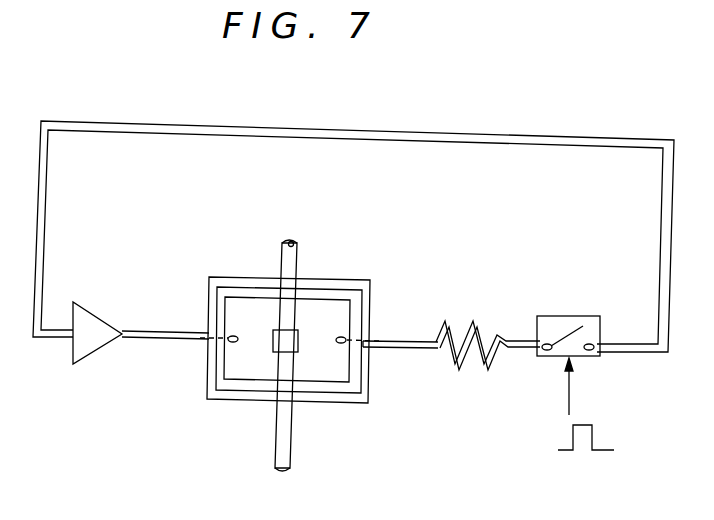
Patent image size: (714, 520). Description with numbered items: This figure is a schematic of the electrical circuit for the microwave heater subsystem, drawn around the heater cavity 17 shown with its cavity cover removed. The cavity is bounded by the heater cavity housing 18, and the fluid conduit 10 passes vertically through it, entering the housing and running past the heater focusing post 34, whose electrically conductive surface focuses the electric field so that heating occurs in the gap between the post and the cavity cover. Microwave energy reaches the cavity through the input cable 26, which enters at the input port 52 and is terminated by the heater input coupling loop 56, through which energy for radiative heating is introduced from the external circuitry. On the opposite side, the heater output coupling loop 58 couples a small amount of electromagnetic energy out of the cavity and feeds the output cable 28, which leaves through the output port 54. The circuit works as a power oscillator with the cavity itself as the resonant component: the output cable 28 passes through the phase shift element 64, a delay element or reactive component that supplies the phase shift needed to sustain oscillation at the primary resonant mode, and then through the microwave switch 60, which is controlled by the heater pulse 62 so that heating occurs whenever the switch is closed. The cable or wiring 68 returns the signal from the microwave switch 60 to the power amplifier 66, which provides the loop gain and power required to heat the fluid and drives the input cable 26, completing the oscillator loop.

The fluid conduit 10 is at (283, 251).
The heater cavity 17 is at (315, 318).
The heater cavity housing 18 is at (368, 288).
The input cable 26 is at (163, 330).
The output cable 28 is at (393, 341).
The heater focusing post 34 is at (272, 352).
The input port 52 is at (206, 347).
The output port 54 is at (370, 355).
The heater input coupling loop 56 is at (232, 344).
The heater output coupling loop 58 is at (341, 346).
The microwave switch 60 is at (571, 316).
The heater pulse 62 is at (586, 404).
The phase shift element 64 is at (478, 329).
The power amplifier 66 is at (88, 314).
The cable or wiring 68 is at (590, 148).